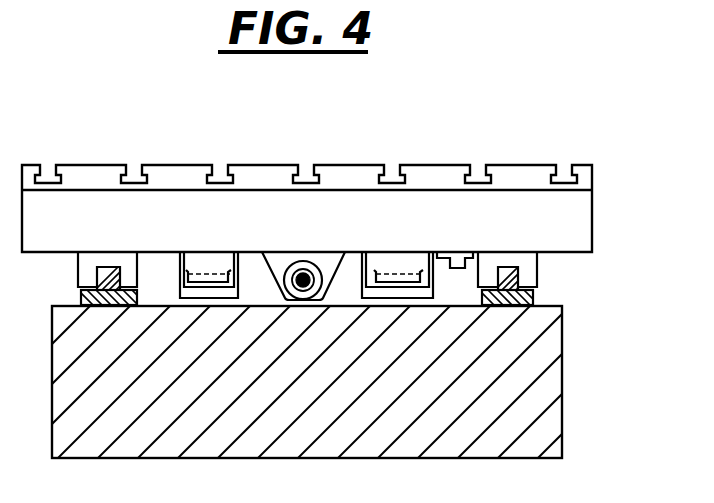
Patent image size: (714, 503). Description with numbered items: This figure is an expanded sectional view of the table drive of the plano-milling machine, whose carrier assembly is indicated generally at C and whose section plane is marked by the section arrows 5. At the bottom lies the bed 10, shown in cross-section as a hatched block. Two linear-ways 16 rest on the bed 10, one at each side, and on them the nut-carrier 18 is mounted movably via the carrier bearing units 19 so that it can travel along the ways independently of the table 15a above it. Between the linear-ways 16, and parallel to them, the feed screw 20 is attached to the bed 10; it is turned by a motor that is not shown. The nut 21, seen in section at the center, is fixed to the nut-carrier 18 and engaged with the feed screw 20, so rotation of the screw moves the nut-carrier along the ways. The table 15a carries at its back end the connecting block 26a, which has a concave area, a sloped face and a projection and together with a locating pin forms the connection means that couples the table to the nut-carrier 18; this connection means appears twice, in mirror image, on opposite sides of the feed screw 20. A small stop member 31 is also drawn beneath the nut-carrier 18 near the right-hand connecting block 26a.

The section line 5- 5 is at (220, 123).
The table 15a is at (458, 165).
The nut-carrier 18 is at (357, 189).
The carrier C is at (593, 228).
The connecting block 26a is at (182, 298).
The feed screw 20 is at (296, 262).
The nut 21 is at (299, 272).
The stop member 31 is at (473, 253).
The carrier bearing unit 19 is at (537, 262).
The linear-ways 16 is at (537, 273).
The bed 10 is at (552, 408).